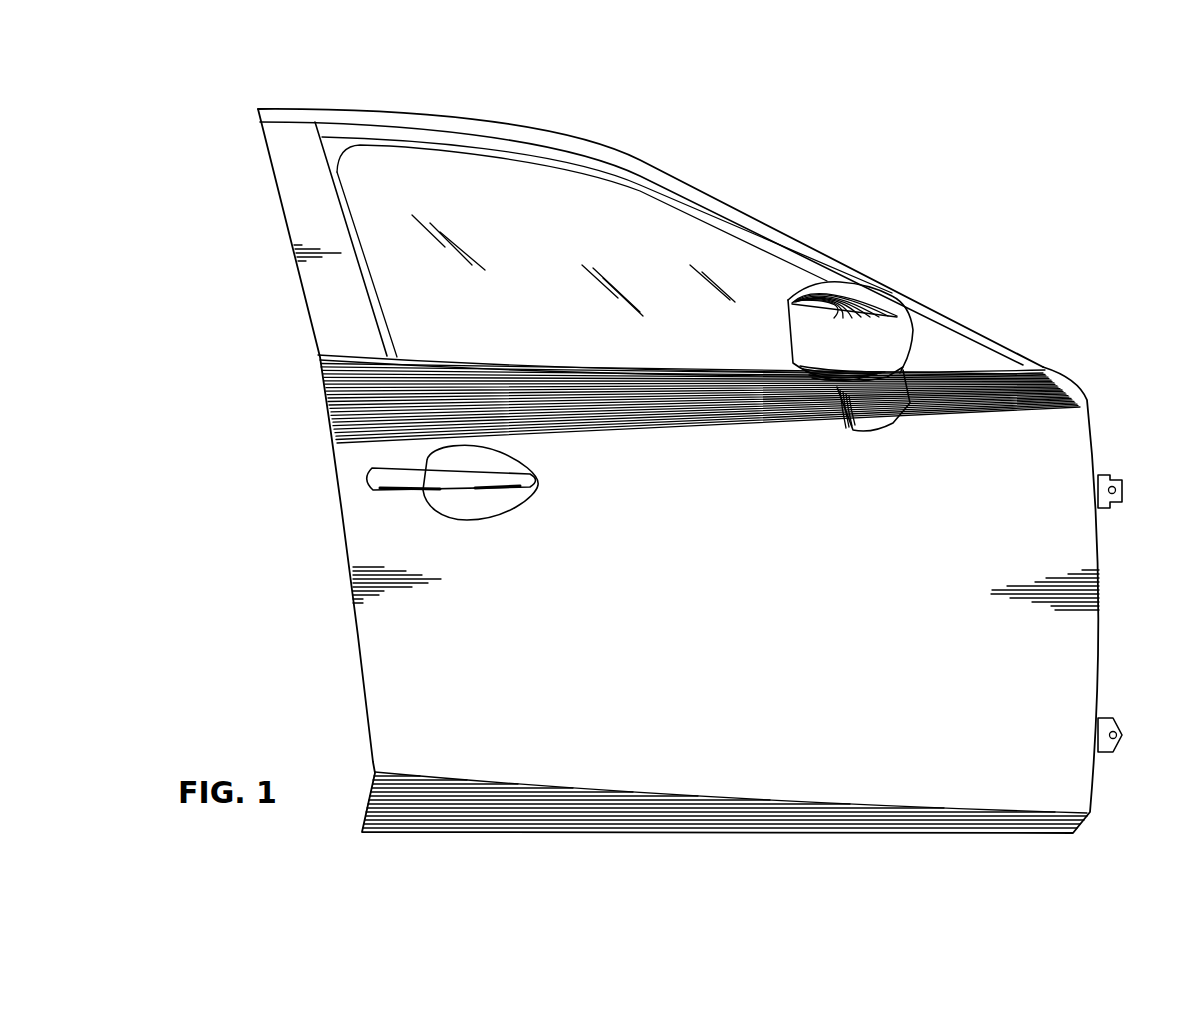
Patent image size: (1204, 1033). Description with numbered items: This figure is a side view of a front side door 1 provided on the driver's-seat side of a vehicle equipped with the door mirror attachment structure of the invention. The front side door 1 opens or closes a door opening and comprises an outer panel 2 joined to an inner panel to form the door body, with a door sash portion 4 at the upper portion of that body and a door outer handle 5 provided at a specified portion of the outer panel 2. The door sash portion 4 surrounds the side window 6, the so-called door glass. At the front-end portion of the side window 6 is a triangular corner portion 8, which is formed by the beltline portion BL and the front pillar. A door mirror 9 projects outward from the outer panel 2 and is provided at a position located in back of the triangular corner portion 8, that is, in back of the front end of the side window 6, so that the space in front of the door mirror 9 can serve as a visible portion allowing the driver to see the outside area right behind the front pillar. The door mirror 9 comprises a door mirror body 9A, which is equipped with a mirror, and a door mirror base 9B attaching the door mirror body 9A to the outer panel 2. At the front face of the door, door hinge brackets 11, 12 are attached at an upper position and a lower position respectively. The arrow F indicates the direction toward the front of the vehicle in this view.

The front side door 1 is at (1107, 408).
The outer panel 2 is at (818, 631).
The door sash portion 4 is at (648, 158).
The door outer handle 5 is at (457, 482).
The side window 6 is at (536, 296).
The triangular corner portion 8 is at (962, 332).
The door mirror 9 is at (786, 288).
The door mirror body 9A is at (857, 292).
The door mirror base 9B is at (880, 417).
The door hinge bracket 11 is at (1122, 490).
The door hinge bracket 12 is at (1117, 723).
The beltline portion BL is at (687, 367).
The vehicle front direction F is at (1113, 578).